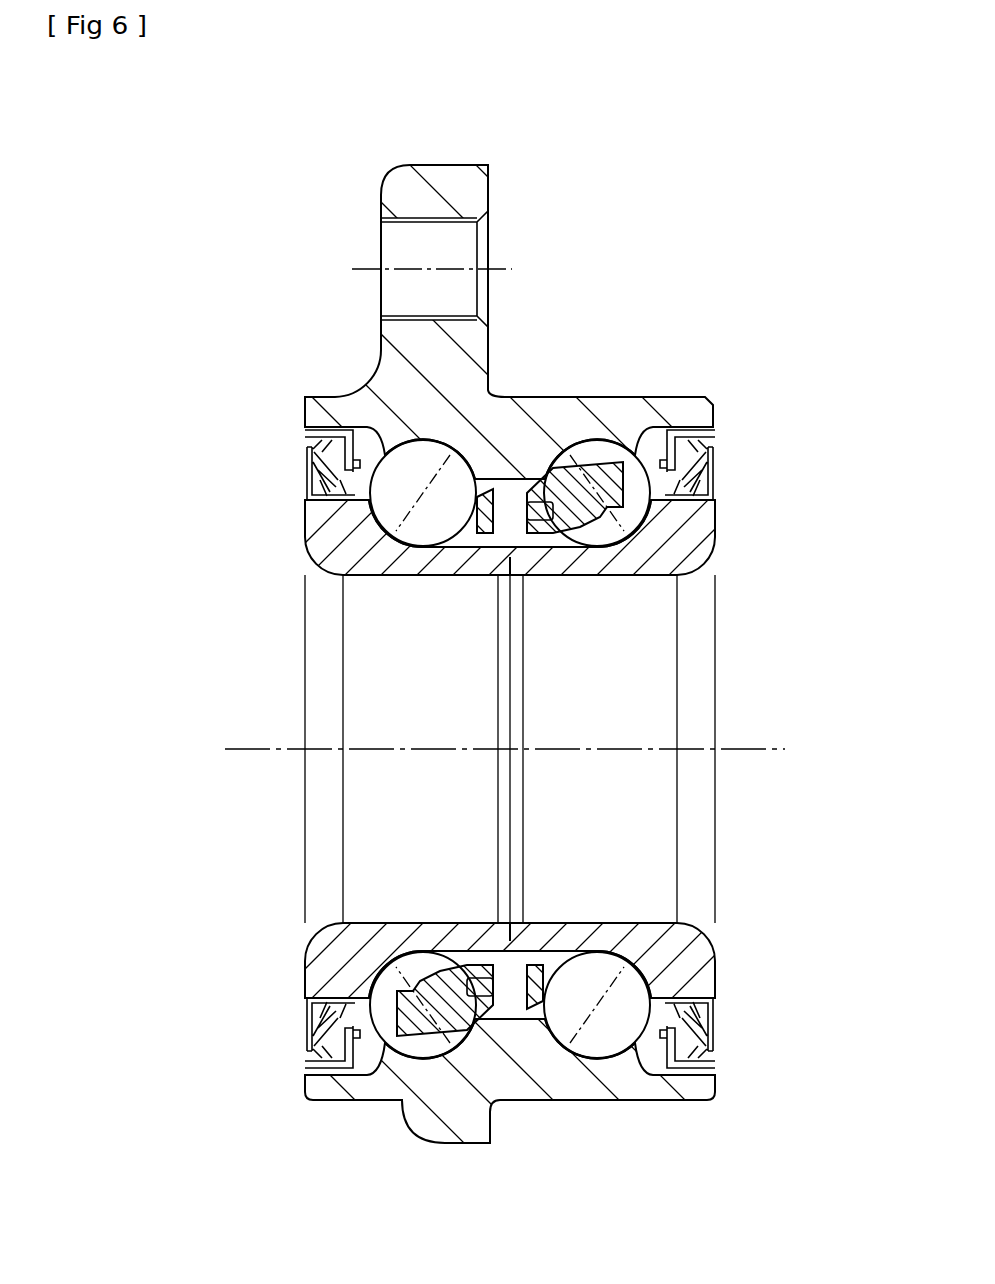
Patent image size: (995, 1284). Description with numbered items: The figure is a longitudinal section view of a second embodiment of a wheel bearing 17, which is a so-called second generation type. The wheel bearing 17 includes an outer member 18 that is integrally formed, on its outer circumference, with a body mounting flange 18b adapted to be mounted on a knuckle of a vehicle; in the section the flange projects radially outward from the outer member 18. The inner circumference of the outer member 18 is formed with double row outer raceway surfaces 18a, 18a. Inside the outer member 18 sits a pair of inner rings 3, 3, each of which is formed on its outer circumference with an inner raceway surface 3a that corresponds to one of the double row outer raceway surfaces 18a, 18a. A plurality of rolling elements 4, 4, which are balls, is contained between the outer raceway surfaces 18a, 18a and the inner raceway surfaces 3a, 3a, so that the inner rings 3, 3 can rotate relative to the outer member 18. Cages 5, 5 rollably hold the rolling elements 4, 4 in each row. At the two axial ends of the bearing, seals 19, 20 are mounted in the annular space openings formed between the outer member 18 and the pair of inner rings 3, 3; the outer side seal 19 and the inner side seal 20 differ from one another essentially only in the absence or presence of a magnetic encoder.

The inner ring 3 is at (325, 535).
The inner raceway surface 3a is at (405, 517).
The rolling elements (balls) 4 is at (610, 1033).
The cage 5 is at (540, 985).
The wheel bearing 17 is at (751, 313).
The outer member 18 is at (385, 370).
The outer raceway surface 18a is at (438, 465).
The body mounting flange 18b is at (435, 187).
The outer side seal 19 is at (312, 462).
The inner side seal 20 is at (702, 465).